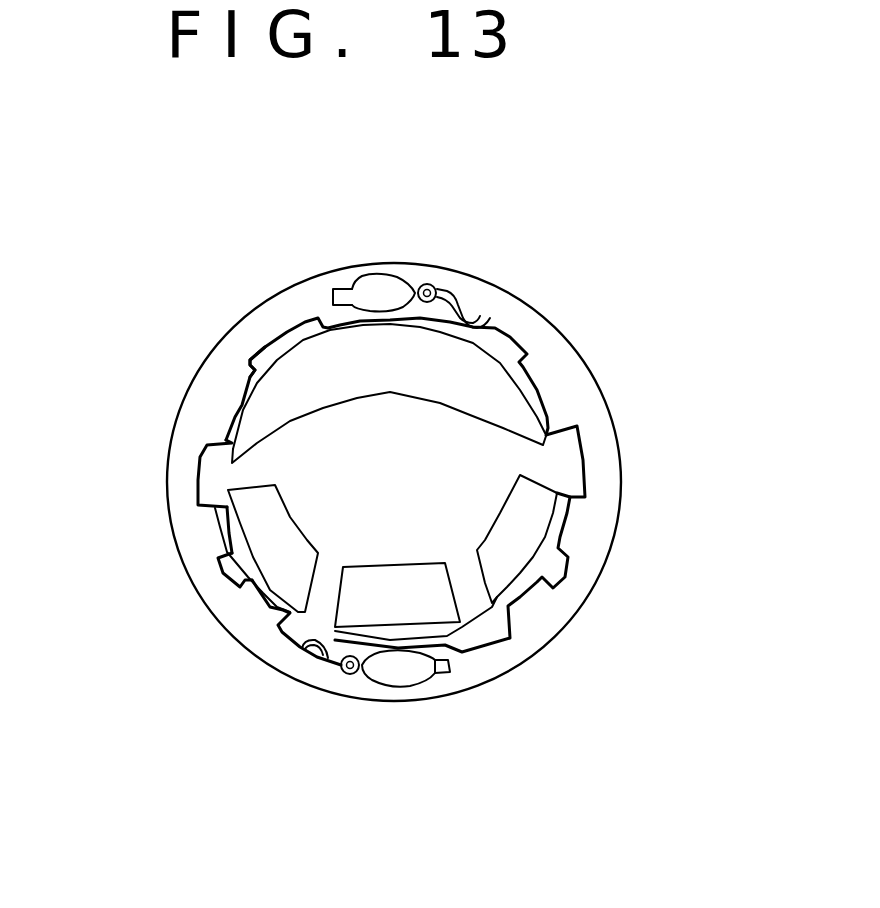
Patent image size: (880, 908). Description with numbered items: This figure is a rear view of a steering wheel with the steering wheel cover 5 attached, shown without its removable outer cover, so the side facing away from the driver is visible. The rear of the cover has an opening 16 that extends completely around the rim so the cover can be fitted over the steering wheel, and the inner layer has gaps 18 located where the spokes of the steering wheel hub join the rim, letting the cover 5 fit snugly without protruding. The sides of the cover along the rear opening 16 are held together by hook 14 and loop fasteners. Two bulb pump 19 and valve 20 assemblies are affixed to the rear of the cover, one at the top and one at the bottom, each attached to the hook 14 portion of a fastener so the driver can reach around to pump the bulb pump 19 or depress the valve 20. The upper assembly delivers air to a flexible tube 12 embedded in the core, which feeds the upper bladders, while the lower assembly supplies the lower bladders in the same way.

The steering wheel cover 5 is at (181, 408).
The flexible tube 12 is at (453, 298).
The hook fastener portion 14 is at (333, 317).
The rear opening 16 is at (265, 347).
The gap 18 is at (213, 480).
The bulb pump 19 is at (383, 295).
The valve 20 is at (428, 284).